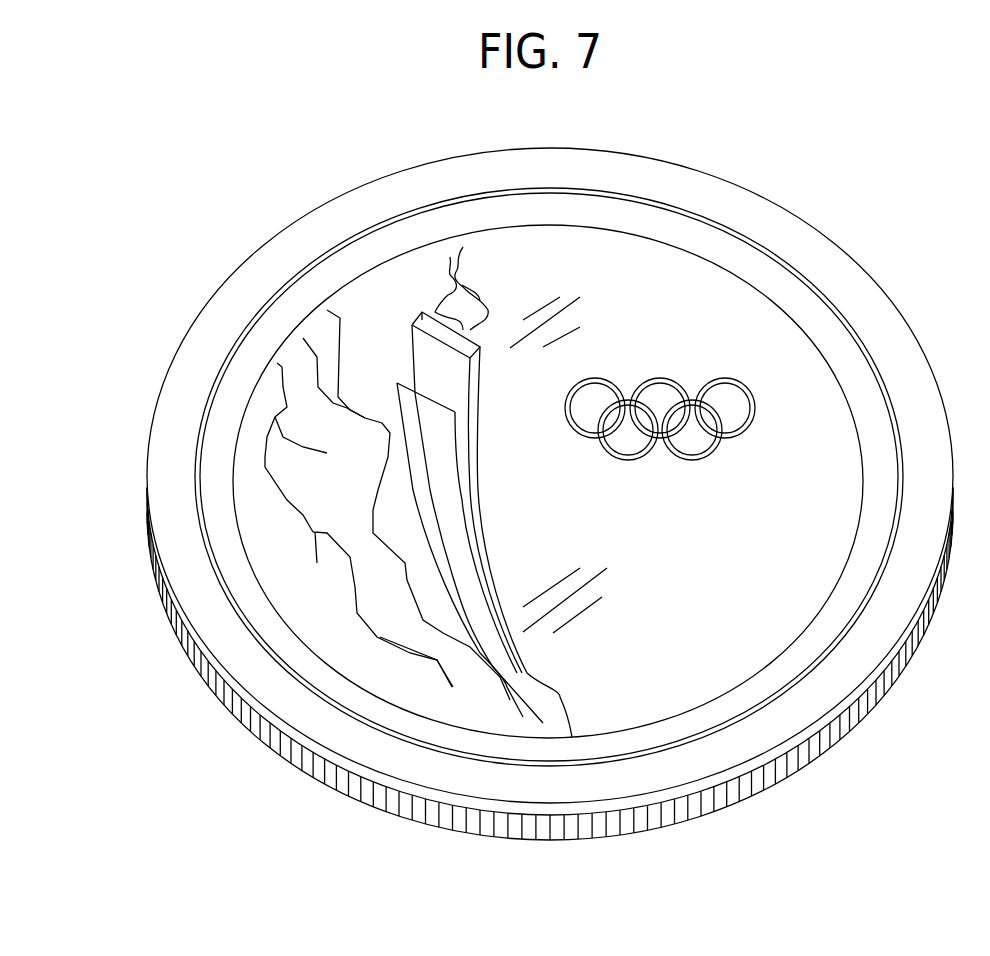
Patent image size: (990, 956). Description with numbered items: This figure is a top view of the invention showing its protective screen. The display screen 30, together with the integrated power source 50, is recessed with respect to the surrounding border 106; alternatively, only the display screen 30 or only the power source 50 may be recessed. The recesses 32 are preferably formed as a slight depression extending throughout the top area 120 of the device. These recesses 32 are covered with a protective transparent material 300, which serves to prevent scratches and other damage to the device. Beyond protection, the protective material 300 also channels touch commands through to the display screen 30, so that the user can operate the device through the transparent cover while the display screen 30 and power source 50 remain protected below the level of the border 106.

The top area 120 is at (350, 205).
The border 106 is at (747, 208).
The integrated power source 50 is at (275, 320).
The recesses 32 is at (814, 283).
The display screen 30 is at (667, 257).
The protective transparent material 300 is at (568, 292).